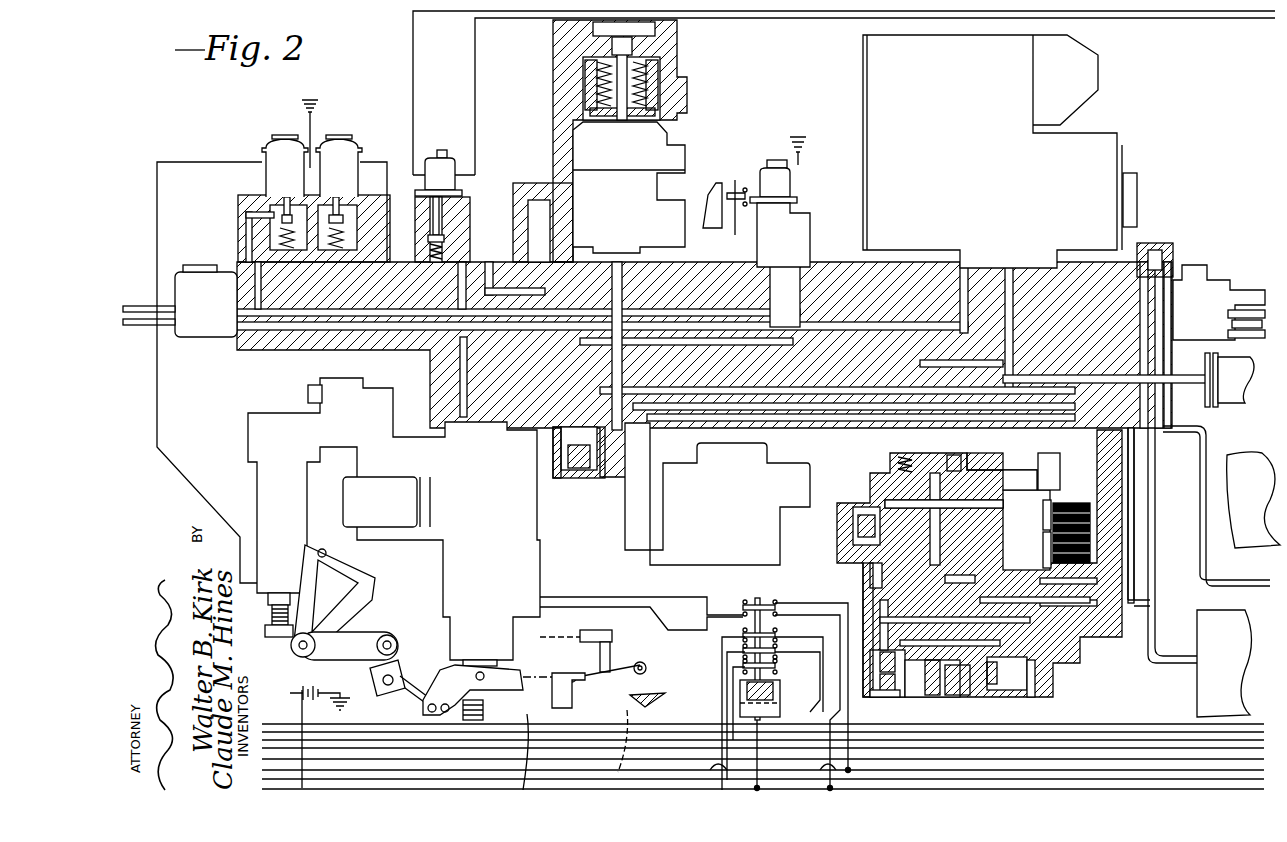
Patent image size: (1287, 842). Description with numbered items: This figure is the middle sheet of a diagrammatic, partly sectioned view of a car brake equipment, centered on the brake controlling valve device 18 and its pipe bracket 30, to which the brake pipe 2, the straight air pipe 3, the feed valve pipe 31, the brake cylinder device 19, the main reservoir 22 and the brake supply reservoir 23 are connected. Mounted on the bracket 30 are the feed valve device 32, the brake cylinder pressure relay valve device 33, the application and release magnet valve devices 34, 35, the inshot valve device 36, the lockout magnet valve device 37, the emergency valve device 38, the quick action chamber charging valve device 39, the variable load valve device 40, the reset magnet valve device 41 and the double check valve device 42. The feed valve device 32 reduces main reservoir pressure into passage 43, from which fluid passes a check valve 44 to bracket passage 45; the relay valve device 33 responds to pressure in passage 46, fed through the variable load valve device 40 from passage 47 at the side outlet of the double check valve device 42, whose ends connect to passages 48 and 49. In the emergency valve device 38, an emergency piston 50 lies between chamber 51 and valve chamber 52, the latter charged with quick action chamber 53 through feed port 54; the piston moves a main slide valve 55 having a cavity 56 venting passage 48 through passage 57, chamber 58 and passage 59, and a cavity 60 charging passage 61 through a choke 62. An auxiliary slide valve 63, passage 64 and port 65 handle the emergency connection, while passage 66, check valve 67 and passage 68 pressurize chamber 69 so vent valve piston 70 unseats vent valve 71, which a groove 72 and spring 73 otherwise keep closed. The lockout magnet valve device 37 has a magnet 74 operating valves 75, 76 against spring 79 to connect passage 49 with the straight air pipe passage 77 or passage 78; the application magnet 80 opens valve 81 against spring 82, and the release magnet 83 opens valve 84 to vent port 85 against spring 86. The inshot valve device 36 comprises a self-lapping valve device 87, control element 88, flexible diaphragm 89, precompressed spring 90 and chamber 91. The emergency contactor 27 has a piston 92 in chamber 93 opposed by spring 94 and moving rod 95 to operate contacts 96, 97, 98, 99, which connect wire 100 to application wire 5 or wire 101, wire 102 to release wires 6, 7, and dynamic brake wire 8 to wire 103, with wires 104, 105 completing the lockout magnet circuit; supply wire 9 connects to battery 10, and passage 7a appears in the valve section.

The brake pipe 2 is at (1130, 760).
The straight air pipe 3 is at (1097, 748).
The brake application wire 5 is at (767, 764).
The brake release wire 6 is at (627, 712).
The brake release wire 7 is at (1160, 775).
The valve passage 7a is at (898, 700).
The dynamic brake wire 8 is at (803, 783).
The electric supply wire 9 is at (530, 724).
The electric battery 10 is at (328, 688).
The brake controlling valve device 18 is at (1150, 262).
The brake cylinder device 19 is at (1244, 400).
The main reservoir 22 is at (1252, 468).
The brake supply reservoir 23 is at (1210, 620).
The emergency contactor 27 is at (775, 680).
The pipe bracket 30 is at (238, 357).
The feed valve pipe 31 is at (396, 720).
The feed valve device 32 is at (1205, 266).
The brake cylinder pressure relay valve device 33 is at (1106, 137).
The application magnet valve device 34 is at (264, 133).
The release magnet valve device 35 is at (357, 138).
The inshot valve device 36 is at (698, 75).
The lockout magnet valve device 37 is at (436, 141).
The emergency valve device 38 is at (1060, 668).
The quick action chamber charging valve device 39 is at (643, 562).
The variable load valve device 40 is at (239, 433).
The reset magnet valve device 41 is at (761, 154).
The double check valve device 42 is at (583, 487).
The passage 43 is at (1070, 270).
The check valve 44 is at (1170, 250).
The bracket passage 45 is at (1150, 348).
The passage 46 is at (924, 262).
The passage 47 is at (560, 472).
The passage 48 is at (830, 395).
The passage 49 is at (605, 470).
The emergency piston 50 is at (1049, 471).
The chamber 51 is at (1092, 535).
The valve chamber 52 is at (882, 502).
The quick action chamber 53 is at (1040, 468).
The feed port 54 is at (1000, 470).
The main slide valve 55 is at (1050, 516).
The cavity 56 is at (1050, 538).
The passage 57 is at (1020, 600).
The chamber 58 is at (962, 700).
The passage 59 is at (935, 692).
The cavity 60 is at (868, 590).
The passage 61 is at (1000, 630).
The choke 62 is at (1080, 645).
The auxiliary slide valve 63 is at (853, 526).
The passage 64 is at (1093, 583).
The port 65 is at (975, 590).
The passage 66 is at (870, 573).
The check valve 67 is at (877, 476).
The passage 68 is at (878, 627).
The chamber 69 is at (888, 660).
The vent valve piston 70 is at (888, 668).
The vent valve 71 is at (1030, 698).
The groove 72 is at (965, 630).
The spring 73 is at (990, 675).
The magnet 74 is at (454, 172).
The valve 75 is at (420, 213).
The valve 76 is at (425, 229).
The straight air pipe passage 77 is at (432, 306).
The passage 78 is at (527, 185).
The spring 79 is at (428, 252).
The magnet 80 is at (263, 190).
The valve 81 is at (297, 197).
The spring 82 is at (287, 252).
The magnet 83 is at (348, 183).
The valve 84 is at (352, 224).
The atmospheric vent port 85 is at (357, 207).
The spring 86 is at (334, 252).
The self-lapping valve device 87 is at (694, 169).
The control element 88 is at (685, 60).
The flexible diaphragm 89 is at (680, 28).
The precompressed spring 90 is at (565, 65).
The chamber 91 is at (555, 40).
The piston 92 is at (775, 690).
The chamber 93 is at (775, 705).
The spring 94 is at (740, 695).
The rod 95 is at (778, 652).
The movable electrical contact 96 is at (733, 667).
The movable electrical contact 97 is at (725, 653).
The movable electrical contact 98 is at (722, 637).
The movable electrical contact 99 is at (760, 598).
The wire 100 is at (684, 598).
The wire 101 is at (790, 612).
The wire 102 is at (700, 625).
The wire 103 is at (818, 640).
The wire 104 is at (413, 45).
The wire 105 is at (477, 71).